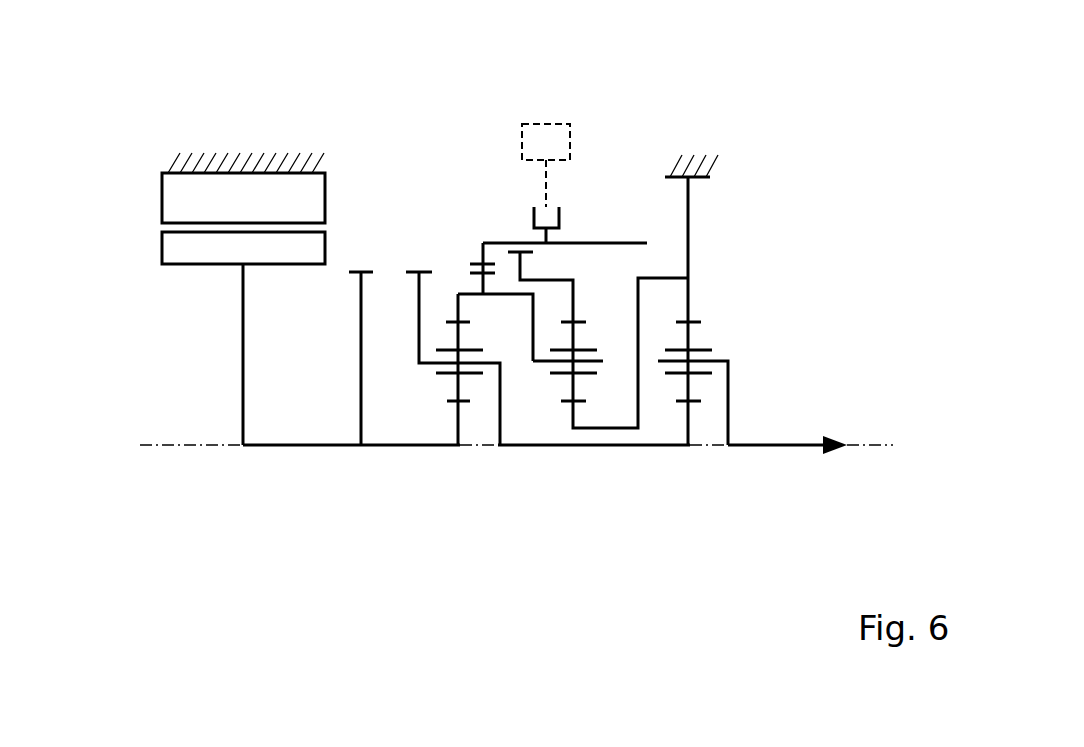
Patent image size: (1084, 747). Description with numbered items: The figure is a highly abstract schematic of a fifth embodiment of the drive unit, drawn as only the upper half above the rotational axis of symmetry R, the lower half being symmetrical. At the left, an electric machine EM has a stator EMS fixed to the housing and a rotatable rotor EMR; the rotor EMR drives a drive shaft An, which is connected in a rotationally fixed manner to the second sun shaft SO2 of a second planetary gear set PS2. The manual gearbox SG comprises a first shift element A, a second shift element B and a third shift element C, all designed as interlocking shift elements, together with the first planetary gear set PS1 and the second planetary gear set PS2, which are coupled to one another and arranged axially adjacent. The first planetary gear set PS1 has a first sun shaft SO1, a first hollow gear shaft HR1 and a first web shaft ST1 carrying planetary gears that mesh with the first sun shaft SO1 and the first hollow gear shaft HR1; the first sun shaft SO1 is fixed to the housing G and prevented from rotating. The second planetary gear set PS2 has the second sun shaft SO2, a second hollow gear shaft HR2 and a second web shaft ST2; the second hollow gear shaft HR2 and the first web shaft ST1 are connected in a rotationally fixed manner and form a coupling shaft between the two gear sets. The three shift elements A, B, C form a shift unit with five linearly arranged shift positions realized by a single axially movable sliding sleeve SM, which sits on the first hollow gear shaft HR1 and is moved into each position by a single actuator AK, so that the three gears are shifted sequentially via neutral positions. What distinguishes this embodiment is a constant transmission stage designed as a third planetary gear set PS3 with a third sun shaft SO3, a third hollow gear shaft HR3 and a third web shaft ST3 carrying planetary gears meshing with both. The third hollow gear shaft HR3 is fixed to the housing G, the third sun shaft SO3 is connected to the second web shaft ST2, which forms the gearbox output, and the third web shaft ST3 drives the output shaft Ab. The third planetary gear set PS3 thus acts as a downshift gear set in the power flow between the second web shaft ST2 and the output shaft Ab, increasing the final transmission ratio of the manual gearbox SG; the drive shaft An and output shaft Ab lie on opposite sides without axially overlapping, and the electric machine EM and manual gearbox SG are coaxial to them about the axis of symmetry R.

The stator EMS is at (172, 203).
The rotor EMR is at (172, 250).
The electric machine EM is at (186, 277).
The drive shaft An is at (270, 447).
The output shaft Ab is at (800, 447).
The rotational axis of symmetry R is at (853, 447).
The third shift element C is at (356, 258).
The second shift element B is at (415, 258).
The first shift element A is at (479, 232).
The sliding sleeve SM is at (523, 194).
The actuator AK is at (561, 108).
The first hollow gear shaft HR1 is at (573, 295).
The housing G is at (697, 122).
The manual gearbox SG is at (804, 107).
The first planetary gear set PS1 is at (573, 465).
The second planetary gear set PS2 is at (460, 465).
The third planetary gear set PS3 is at (688, 465).
The second hollow gear shaft HR2 is at (458, 308).
The second web shaft ST2 is at (428, 363).
The second sun shaft SO2 is at (458, 418).
The first sun shaft SO1 is at (572, 413).
The first web shaft ST1 is at (600, 365).
The third hollow gear shaft HR3 is at (690, 300).
The third web shaft ST3 is at (722, 360).
The third sun shaft SO3 is at (693, 415).